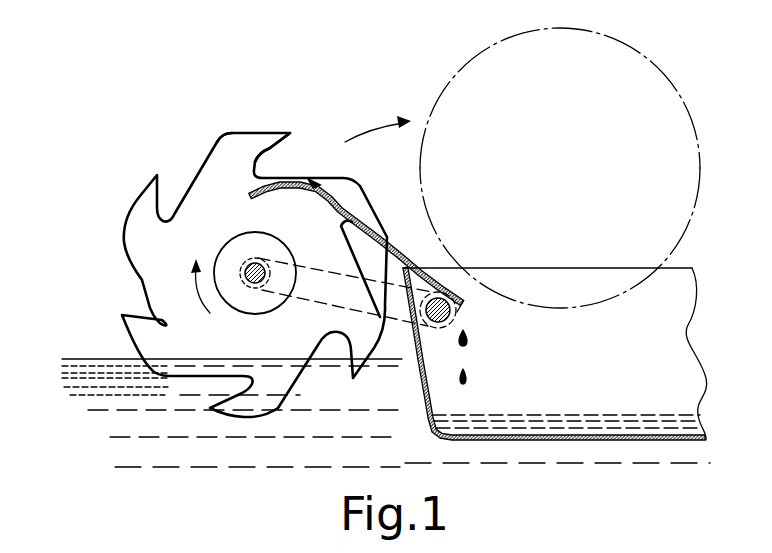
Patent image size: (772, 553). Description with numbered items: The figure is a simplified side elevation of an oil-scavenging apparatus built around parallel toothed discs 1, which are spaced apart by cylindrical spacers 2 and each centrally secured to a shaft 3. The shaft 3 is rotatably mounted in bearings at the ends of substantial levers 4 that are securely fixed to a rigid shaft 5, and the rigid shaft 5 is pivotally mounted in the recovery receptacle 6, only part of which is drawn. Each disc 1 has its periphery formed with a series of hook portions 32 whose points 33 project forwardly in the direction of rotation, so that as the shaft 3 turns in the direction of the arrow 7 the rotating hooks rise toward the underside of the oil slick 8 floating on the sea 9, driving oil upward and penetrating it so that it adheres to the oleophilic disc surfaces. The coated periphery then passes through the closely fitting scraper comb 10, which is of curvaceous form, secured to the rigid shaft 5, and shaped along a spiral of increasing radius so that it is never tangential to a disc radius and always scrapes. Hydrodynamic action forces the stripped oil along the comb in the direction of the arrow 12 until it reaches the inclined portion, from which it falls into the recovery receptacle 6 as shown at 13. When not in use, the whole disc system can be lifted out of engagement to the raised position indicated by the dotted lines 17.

The toothed disc 1 is at (140, 216).
The cylindrical spacer 2 is at (223, 247).
The shaft 3 is at (220, 138).
The hook portion 32 is at (253, 262).
The point 33 is at (268, 145).
The arrow 12 is at (318, 178).
The scraper comb 10 is at (347, 212).
The dotted lines 17 is at (487, 63).
The recovery receptacle 6 is at (598, 266).
The lever 4 is at (418, 275).
The rigid shaft 5 is at (443, 293).
The falling oil 13 is at (470, 378).
The oil slick 8 is at (95, 378).
The sea 9 is at (91, 480).
The arrow 7 is at (188, 289).